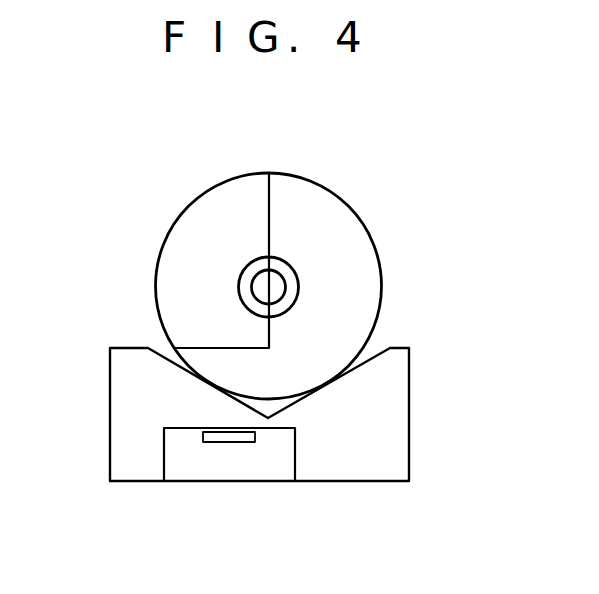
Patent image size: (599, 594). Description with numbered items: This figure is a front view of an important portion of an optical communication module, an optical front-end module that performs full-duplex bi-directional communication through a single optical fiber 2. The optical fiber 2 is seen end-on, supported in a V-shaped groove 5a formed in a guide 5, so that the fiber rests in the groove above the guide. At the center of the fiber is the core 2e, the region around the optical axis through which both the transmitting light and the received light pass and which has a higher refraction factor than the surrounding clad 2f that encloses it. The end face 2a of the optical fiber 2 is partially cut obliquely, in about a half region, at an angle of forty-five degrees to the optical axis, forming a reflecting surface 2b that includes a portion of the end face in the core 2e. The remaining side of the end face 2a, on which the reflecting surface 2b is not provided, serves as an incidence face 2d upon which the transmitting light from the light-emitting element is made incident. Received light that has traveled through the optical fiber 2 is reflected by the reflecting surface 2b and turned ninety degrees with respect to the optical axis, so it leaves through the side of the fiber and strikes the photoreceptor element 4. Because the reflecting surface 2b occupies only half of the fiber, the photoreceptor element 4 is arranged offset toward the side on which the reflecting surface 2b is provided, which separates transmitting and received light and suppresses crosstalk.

The optical fiber 2 is at (332, 188).
The end face 2a is at (328, 222).
The reflecting surface 2b is at (247, 273).
The incidence face 2d is at (293, 288).
The core 2e is at (275, 280).
The clad 2f is at (279, 266).
The guide 5 is at (393, 378).
The V-shaped groove 5a is at (288, 408).
The photoreceptor element 4 is at (188, 462).